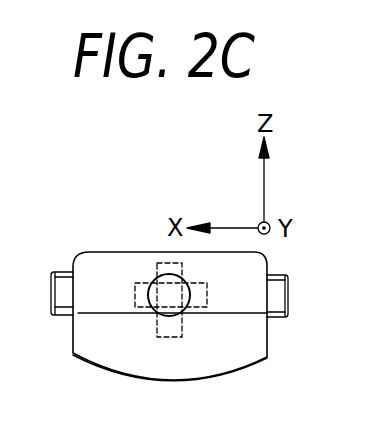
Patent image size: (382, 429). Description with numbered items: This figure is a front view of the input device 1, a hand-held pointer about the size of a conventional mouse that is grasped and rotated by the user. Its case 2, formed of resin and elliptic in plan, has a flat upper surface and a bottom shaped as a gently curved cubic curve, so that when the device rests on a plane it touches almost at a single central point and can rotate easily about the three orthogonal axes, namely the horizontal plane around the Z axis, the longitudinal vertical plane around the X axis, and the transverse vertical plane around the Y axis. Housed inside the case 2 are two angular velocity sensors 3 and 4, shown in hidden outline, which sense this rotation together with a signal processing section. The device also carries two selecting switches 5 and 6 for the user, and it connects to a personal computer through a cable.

The input device 1 is at (136, 210).
The case 2 is at (252, 345).
The angular velocity sensor 3 is at (180, 337).
The angular velocity sensor 4 is at (135, 283).
The selecting switch 5 is at (168, 317).
The selecting switch 6 is at (278, 297).